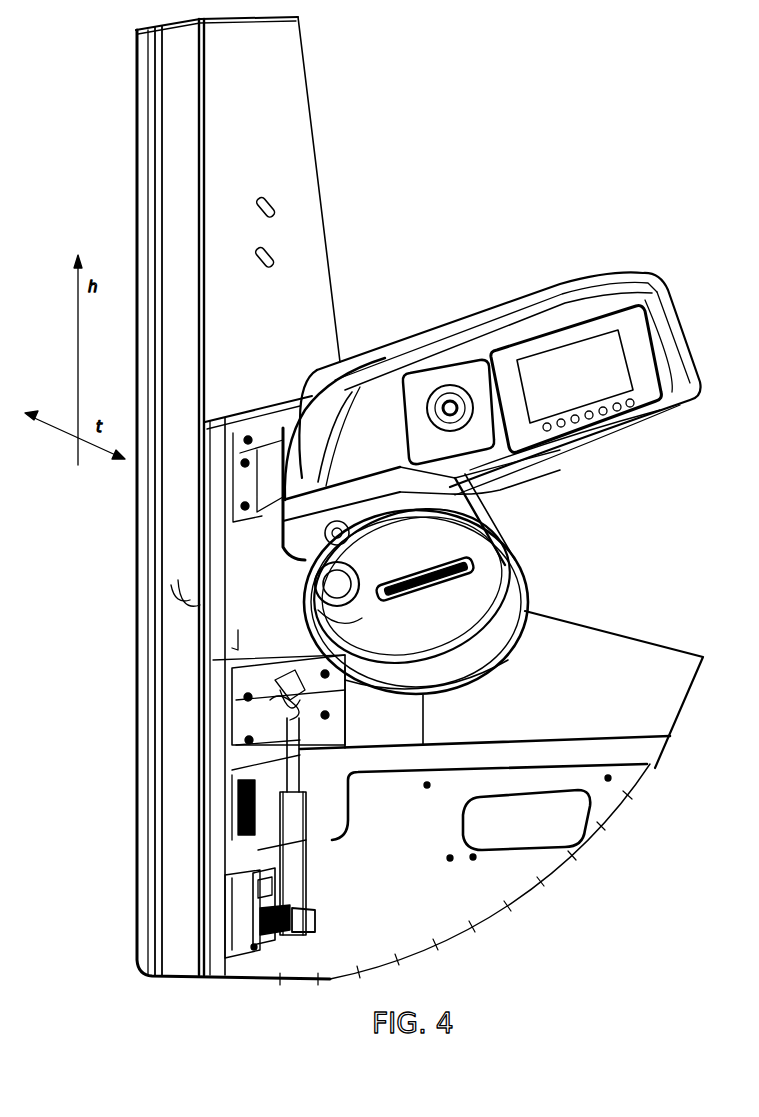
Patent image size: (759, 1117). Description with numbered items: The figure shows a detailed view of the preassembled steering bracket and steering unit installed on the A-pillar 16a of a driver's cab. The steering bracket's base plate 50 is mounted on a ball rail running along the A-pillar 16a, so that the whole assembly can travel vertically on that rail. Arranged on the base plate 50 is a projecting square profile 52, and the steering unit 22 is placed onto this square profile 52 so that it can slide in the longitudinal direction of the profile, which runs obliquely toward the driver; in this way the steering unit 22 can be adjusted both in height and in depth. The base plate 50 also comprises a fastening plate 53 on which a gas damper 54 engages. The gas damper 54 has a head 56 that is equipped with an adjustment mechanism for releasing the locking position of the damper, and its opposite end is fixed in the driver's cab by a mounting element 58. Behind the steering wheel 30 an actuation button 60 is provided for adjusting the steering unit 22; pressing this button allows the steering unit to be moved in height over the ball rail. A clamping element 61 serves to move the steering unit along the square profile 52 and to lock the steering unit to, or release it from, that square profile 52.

The A-pillar 16a is at (290, 196).
The steering unit 22 is at (462, 303).
The steering wheel 30 is at (525, 611).
The base plate 50 is at (262, 652).
The projecting square profile 52 is at (285, 702).
The fastening plate 53 is at (284, 765).
The gas damper 54 is at (300, 838).
The head 56 is at (290, 765).
The mounting element 58 is at (290, 937).
The actuation button 60 is at (360, 472).
The clamping element 61 is at (495, 498).